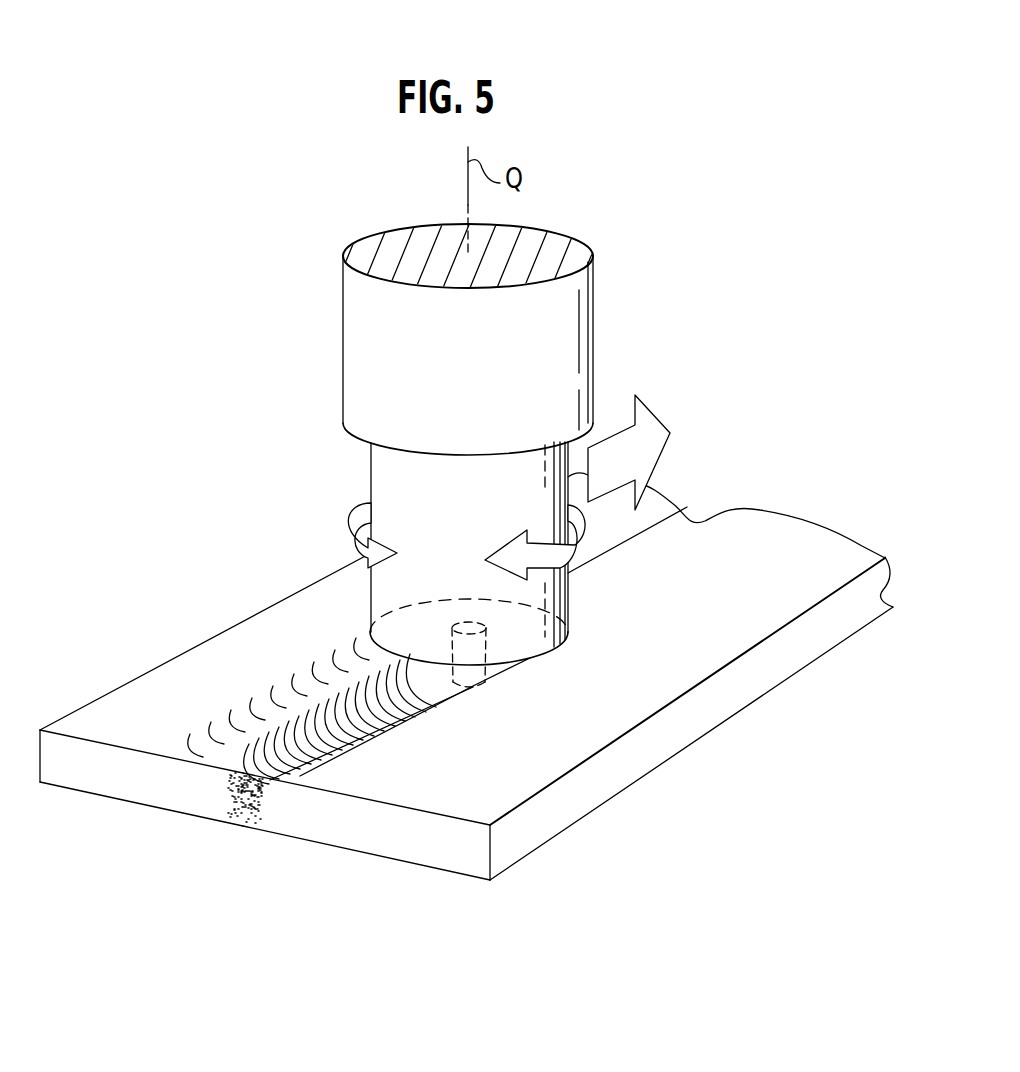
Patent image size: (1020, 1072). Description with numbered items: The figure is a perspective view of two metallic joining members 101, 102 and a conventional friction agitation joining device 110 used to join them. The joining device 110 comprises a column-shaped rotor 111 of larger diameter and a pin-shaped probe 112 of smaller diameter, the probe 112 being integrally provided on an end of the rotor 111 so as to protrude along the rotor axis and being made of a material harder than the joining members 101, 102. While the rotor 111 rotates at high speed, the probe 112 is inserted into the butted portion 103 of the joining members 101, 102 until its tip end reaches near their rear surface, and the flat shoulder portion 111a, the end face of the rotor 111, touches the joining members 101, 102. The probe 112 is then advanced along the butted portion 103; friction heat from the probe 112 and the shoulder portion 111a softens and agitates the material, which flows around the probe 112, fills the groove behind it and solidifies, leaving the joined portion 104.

The joining member 101 is at (153, 792).
The joining member 102 is at (408, 852).
The butted portion 103 is at (716, 505).
The joined portion 104 is at (297, 732).
The joining device 110 is at (614, 325).
The rotor 111 is at (545, 598).
The shoulder portion 111a is at (355, 645).
The probe 112 is at (472, 690).